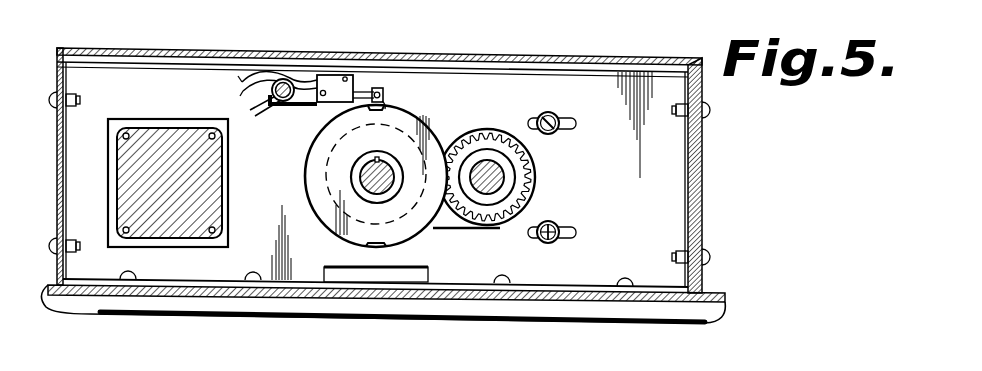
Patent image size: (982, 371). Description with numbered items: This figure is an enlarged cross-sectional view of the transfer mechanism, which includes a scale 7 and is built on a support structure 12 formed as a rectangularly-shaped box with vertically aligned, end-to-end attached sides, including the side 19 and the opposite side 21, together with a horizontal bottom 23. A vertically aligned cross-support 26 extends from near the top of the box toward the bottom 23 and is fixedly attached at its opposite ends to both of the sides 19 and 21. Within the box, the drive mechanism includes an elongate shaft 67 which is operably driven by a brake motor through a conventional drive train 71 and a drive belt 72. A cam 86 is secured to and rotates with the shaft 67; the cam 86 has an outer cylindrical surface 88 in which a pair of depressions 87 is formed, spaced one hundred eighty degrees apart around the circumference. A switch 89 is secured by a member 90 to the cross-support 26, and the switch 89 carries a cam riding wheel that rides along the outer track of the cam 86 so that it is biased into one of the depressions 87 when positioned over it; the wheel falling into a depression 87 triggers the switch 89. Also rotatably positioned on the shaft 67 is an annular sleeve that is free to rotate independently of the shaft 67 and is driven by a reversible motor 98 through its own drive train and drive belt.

The scale 7 is at (388, 304).
The support structure 12 is at (634, 62).
The side 19 is at (57, 165).
The side 21 is at (702, 168).
The horizontal bottom 23 is at (545, 287).
The cross-support 26 is at (630, 200).
The elongate shaft 67 is at (392, 182).
The drive train 71 is at (532, 158).
The drive belt 72 is at (470, 234).
The cam 86 is at (422, 124).
The depressions 87 is at (388, 103).
The outer cylindrical surface 88 is at (308, 150).
The switch 89 is at (340, 75).
The member 90 is at (296, 105).
The reversible motor 98 is at (182, 128).